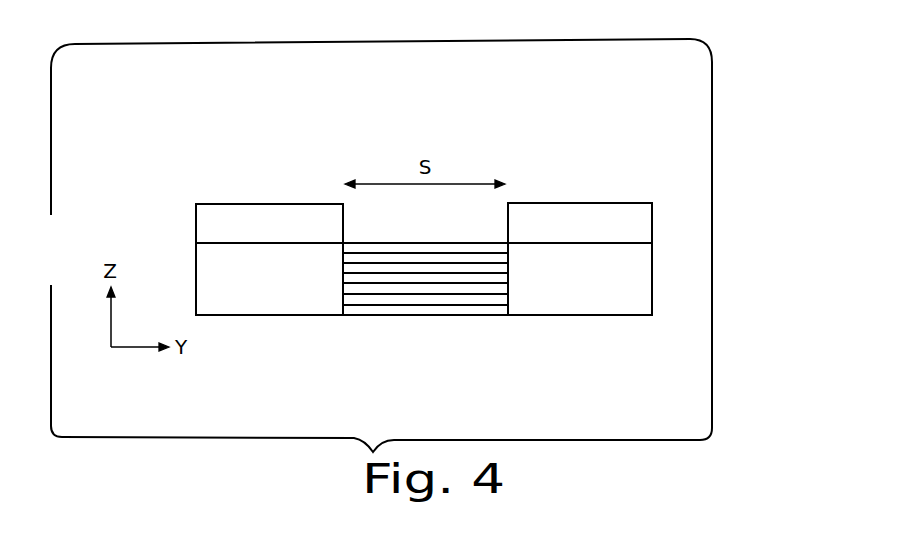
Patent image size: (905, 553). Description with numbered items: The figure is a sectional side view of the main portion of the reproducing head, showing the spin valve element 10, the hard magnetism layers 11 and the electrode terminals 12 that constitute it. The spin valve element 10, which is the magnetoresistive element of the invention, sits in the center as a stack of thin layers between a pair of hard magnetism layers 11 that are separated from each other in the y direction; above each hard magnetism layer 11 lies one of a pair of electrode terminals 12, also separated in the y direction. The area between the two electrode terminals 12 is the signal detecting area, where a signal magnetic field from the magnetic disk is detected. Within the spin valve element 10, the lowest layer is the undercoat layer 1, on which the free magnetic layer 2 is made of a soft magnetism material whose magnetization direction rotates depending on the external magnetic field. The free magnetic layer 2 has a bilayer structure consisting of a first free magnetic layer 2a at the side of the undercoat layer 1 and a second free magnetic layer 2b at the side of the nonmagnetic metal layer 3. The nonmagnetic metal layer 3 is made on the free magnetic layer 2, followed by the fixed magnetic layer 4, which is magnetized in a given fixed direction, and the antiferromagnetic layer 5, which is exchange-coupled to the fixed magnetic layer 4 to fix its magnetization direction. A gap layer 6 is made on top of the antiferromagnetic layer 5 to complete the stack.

The undercoat layer 1 is at (352, 312).
The free magnetic layer 2 is at (480, 391).
The first free magnetic layer 2a is at (365, 308).
The second free magnetic layer 2b is at (433, 303).
The nonmagnetic metal layer 3 is at (424, 282).
The fixed magnetic layer 4 is at (396, 270).
The antiferromagnetic layer 5 is at (369, 260).
The gap layer 6 is at (353, 248).
The spin valve element 10 is at (507, 116).
The hard magnetism layers 11 is at (267, 308).
The electrode terminals 12 is at (256, 218).